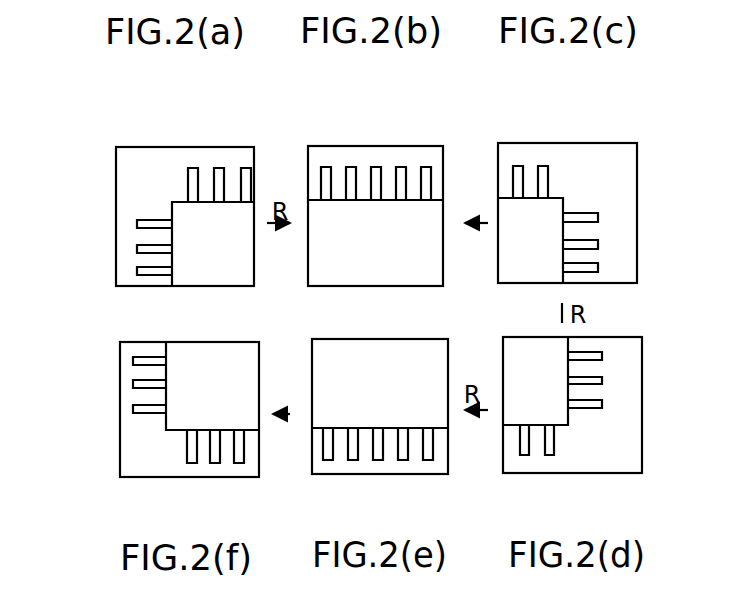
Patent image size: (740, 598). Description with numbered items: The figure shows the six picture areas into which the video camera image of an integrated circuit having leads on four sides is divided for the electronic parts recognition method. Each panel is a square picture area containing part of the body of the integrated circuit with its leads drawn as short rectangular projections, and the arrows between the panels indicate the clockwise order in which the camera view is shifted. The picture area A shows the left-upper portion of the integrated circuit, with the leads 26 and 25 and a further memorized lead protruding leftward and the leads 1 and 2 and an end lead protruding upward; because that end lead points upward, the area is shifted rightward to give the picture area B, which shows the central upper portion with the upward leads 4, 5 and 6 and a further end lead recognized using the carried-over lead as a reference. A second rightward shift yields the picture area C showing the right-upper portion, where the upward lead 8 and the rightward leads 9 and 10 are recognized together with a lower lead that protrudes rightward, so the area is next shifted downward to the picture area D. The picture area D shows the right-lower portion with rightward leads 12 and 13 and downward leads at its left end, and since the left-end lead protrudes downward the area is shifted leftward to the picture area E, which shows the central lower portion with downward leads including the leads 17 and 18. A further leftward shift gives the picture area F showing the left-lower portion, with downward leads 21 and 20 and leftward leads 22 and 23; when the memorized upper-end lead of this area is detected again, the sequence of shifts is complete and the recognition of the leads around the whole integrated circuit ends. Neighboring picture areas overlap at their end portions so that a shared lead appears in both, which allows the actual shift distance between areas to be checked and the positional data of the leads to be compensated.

The lead 1 is at (186, 167).
The lead 2 is at (214, 178).
The lead 4 is at (353, 170).
The lead 5 is at (380, 167).
The lead 6 is at (402, 170).
The lead 8 is at (544, 165).
The lead 9 is at (598, 217).
The lead 10 is at (598, 243).
The lead 12 is at (602, 380).
The lead 13 is at (602, 404).
The lead 17 is at (383, 460).
The lead 18 is at (357, 460).
The lead 20 is at (213, 463).
The lead 21 is at (188, 463).
The lead 22 is at (135, 409).
The lead 23 is at (133, 384).
The lead 25 is at (138, 250).
The lead 26 is at (138, 226).
The picture area A is at (233, 157).
The picture area B is at (417, 155).
The picture area C is at (625, 147).
The picture area D is at (608, 337).
The picture area E is at (417, 352).
The picture area F is at (218, 352).